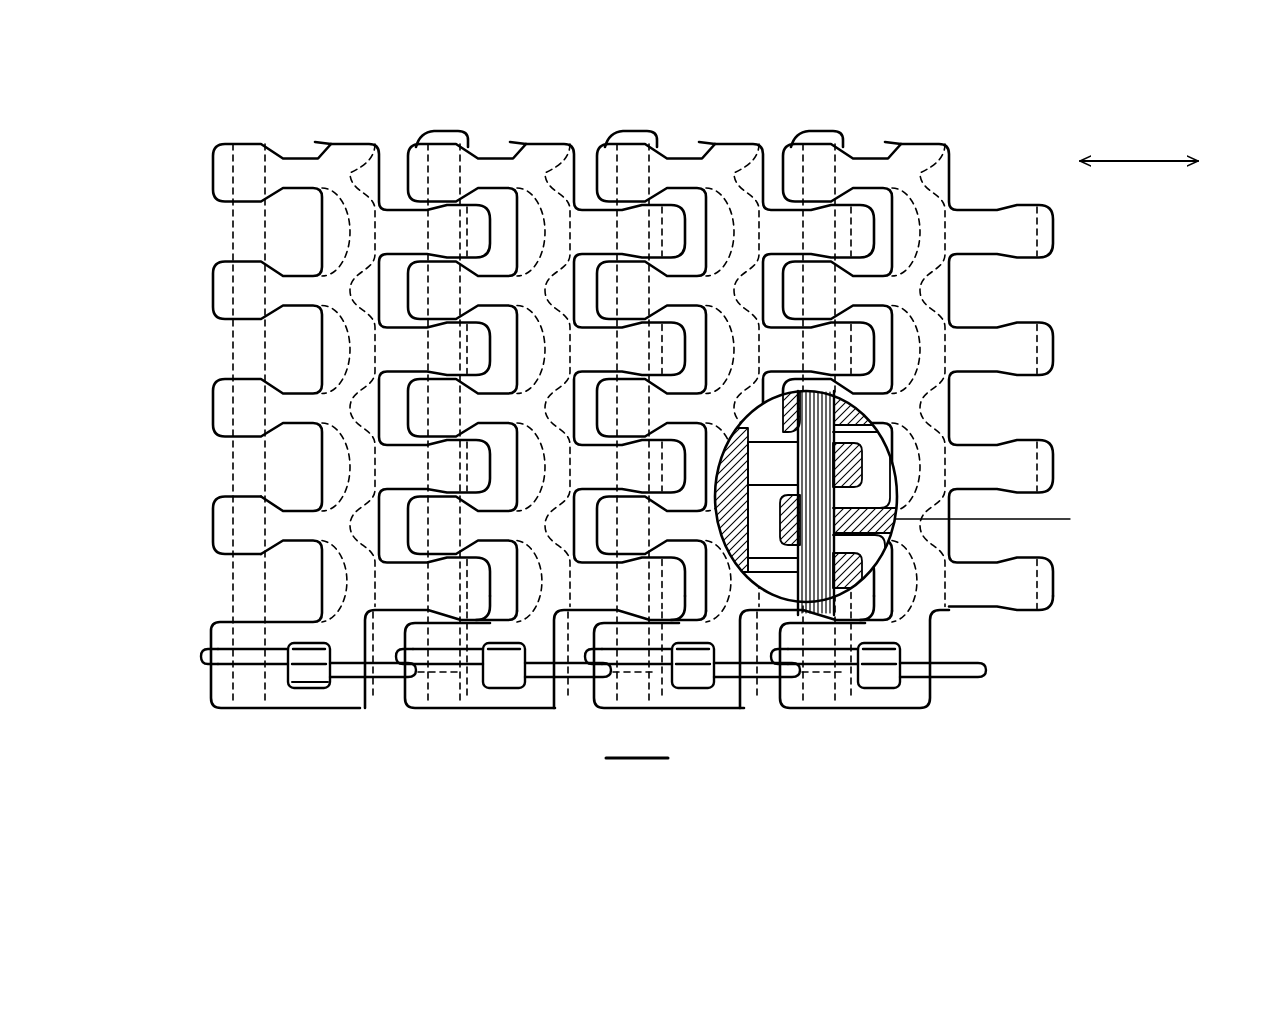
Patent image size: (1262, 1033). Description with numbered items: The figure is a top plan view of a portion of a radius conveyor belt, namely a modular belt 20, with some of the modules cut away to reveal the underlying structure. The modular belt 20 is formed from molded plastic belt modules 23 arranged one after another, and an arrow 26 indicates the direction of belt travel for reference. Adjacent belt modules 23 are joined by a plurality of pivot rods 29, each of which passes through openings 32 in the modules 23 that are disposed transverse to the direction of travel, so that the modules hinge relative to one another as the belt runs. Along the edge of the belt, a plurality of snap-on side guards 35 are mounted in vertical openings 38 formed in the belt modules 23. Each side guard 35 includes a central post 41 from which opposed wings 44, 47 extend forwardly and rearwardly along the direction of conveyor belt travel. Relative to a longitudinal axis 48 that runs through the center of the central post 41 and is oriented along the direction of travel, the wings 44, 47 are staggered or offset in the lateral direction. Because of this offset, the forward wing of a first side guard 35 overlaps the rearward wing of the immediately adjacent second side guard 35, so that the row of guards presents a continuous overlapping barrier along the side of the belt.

The modular belt 20 is at (816, 76).
The belt module 23 is at (370, 168).
The arrow 26 is at (1157, 161).
The pivot rod 29 is at (818, 442).
The opening 32 is at (215, 502).
The snap-on side guard 35 is at (306, 700).
The vertical opening 38 is at (322, 690).
The central post 41 is at (212, 665).
The wing 44 is at (212, 658).
The wing 47 is at (388, 680).
The longitudinal axis 48 is at (384, 663).